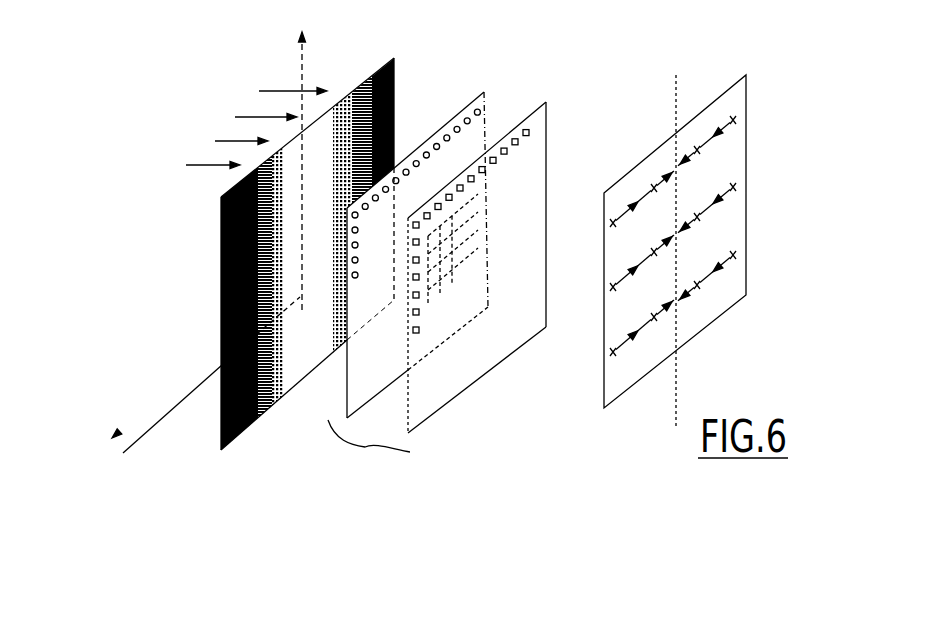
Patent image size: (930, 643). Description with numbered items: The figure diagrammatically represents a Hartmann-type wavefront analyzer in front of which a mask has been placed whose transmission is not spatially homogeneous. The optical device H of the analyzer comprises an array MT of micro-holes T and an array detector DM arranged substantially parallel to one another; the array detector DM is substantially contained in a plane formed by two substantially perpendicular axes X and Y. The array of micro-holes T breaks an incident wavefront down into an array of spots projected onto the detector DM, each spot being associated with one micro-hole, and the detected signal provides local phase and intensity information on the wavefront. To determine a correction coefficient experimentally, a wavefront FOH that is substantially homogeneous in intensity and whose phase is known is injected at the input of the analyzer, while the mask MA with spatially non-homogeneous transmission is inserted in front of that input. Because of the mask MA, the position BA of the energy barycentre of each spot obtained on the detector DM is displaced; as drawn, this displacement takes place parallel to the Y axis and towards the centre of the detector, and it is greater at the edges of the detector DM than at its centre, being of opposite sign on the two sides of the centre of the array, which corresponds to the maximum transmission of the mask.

The homogeneous wavefront FOH is at (246, 117).
The X axis X is at (316, 167).
The Y axis Y is at (206, 382).
The mask MA is at (221, 304).
The array of micro-holes MT is at (484, 110).
The micro-holes T is at (466, 118).
The array detector DM is at (549, 127).
The optical device H is at (369, 452).
The position of the energy barycentre BA is at (746, 140).